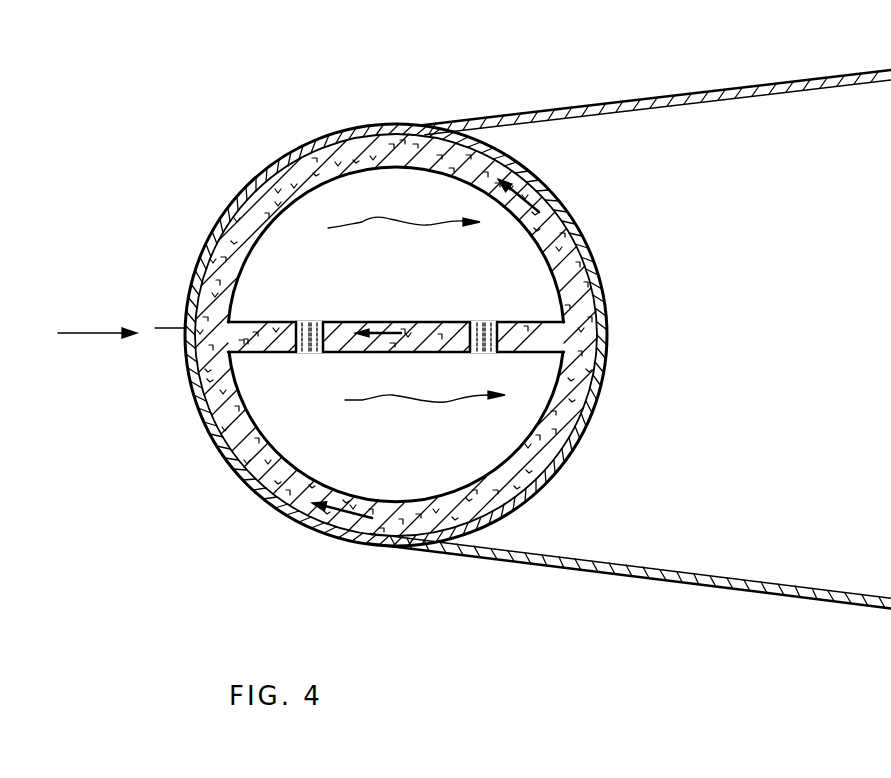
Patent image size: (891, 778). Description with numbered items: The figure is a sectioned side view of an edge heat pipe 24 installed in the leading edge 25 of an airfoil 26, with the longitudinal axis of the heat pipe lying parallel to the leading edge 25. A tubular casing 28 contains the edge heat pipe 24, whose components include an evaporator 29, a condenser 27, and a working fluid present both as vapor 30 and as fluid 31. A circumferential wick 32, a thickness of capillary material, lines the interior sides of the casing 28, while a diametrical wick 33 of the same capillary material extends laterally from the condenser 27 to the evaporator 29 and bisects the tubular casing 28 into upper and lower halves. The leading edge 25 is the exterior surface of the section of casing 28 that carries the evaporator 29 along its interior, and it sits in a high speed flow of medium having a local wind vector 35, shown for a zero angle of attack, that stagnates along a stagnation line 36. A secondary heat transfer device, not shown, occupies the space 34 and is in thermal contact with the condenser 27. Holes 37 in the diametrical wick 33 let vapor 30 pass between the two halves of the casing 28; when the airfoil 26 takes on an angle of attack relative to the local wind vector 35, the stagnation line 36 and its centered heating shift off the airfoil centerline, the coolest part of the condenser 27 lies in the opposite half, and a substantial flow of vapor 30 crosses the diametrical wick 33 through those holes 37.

The edge heat pipe 24 is at (172, 428).
The leading edge 25 is at (186, 270).
The airfoil 26 is at (593, 573).
The condenser 27 is at (516, 303).
The tubular casing 28 is at (373, 127).
The evaporator 29 is at (251, 285).
The vapor 30 is at (362, 222).
The fluid 31 is at (539, 212).
The circumferential wick 32 is at (568, 242).
The diametrical wick 33 is at (450, 322).
The space 34 is at (676, 348).
The local wind vector 35 is at (88, 333).
The stagnation line 36 is at (155, 328).
The holes 37 is at (320, 322).